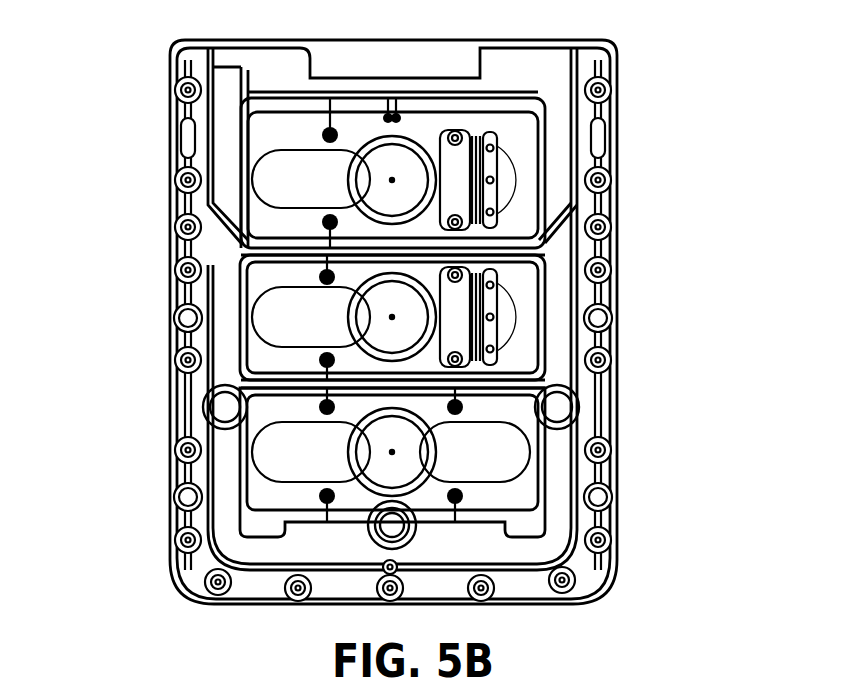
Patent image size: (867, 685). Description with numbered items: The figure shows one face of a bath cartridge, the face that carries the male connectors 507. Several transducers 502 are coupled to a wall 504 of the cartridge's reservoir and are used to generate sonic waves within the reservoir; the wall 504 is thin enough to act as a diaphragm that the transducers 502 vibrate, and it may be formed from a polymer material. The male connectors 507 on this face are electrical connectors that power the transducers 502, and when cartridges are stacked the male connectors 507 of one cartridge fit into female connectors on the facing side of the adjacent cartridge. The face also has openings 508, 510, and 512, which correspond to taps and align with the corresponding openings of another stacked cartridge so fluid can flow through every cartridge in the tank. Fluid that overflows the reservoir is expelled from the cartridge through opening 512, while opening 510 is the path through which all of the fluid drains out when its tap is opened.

The transducers 502 is at (372, 193).
The wall 504 is at (271, 136).
The male connectors 507 is at (515, 178).
The opening 508 is at (203, 415).
The opening 510 is at (378, 546).
The opening 512 is at (582, 405).